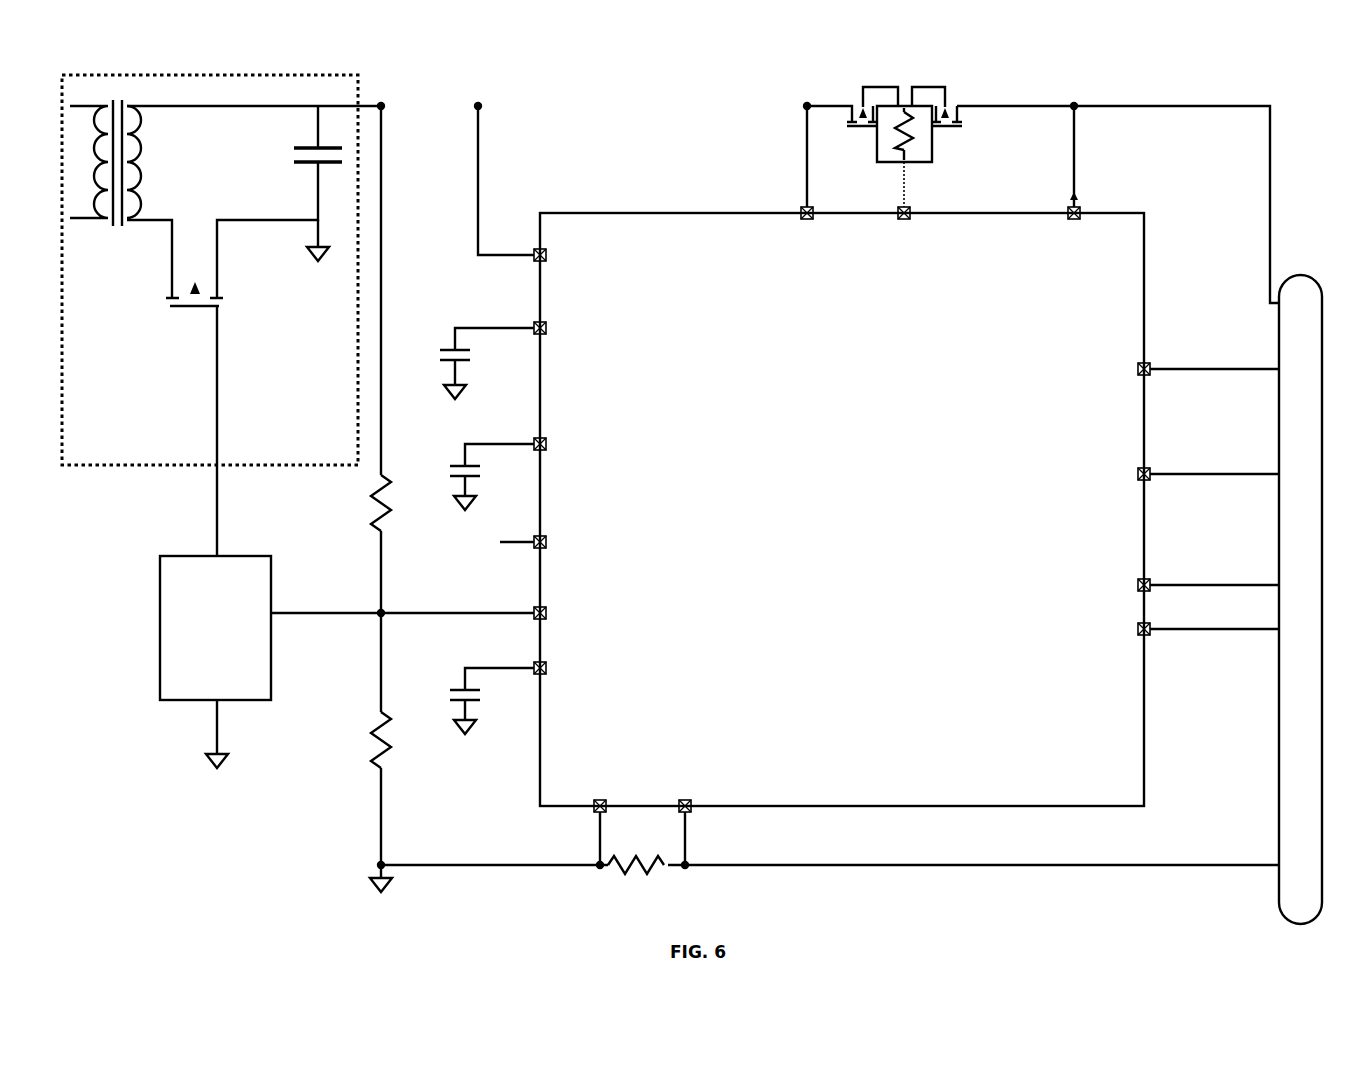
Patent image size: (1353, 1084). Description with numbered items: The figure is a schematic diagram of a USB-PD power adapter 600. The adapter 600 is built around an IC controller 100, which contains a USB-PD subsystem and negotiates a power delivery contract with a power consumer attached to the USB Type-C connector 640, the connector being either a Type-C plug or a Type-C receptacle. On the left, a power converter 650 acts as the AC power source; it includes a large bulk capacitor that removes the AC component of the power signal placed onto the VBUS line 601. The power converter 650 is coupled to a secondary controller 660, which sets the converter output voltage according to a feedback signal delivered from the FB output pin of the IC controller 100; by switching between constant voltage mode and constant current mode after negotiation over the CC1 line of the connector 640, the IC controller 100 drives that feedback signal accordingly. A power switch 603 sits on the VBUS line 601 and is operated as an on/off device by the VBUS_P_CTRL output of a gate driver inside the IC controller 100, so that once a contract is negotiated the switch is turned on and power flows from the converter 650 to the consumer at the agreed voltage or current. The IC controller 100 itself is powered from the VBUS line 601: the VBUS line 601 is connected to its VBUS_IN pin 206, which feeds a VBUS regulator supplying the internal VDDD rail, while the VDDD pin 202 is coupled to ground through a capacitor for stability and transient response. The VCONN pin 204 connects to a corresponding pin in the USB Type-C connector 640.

The IC controller 100 is at (864, 483).
The VDDD pin 202 is at (533, 335).
The VCONN pin 204 is at (1152, 362).
The VBUS_IN pin 206 is at (533, 262).
The USB-PD power adapter 600 is at (256, 807).
The VBUS line 601 is at (1273, 119).
The power switch 603 is at (902, 84).
The USB Type-C connector 640 is at (1300, 272).
The power converter 650 is at (113, 468).
The secondary controller 660 is at (347, 662).